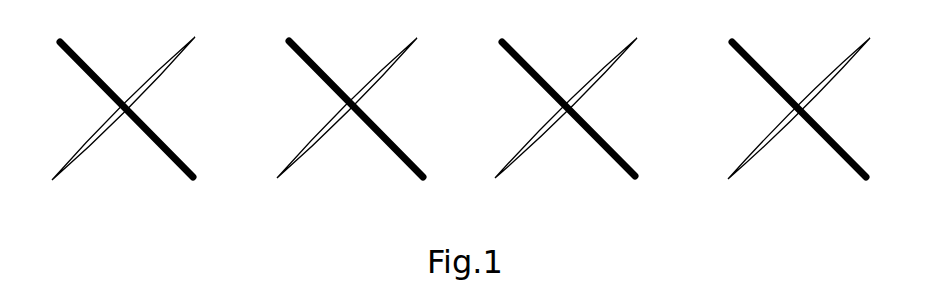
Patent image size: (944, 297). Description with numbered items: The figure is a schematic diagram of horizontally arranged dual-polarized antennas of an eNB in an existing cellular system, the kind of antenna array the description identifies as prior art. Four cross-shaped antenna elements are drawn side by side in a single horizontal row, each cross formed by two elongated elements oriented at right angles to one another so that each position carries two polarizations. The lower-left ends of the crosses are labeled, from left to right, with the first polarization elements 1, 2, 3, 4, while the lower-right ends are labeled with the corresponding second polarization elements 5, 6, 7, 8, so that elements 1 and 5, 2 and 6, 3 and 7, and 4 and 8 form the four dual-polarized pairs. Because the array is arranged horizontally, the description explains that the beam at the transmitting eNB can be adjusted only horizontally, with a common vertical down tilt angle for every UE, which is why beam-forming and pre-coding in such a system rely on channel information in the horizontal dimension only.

The first thin elongated element 1 is at (121, 126).
The second thin elongated element 2 is at (342, 126).
The third thin elongated element 3 is at (563, 126).
The fourth thin elongated element 4 is at (796, 126).
The first thick bar 5 is at (129, 128).
The second thick bar 6 is at (359, 128).
The third thick bar 7 is at (571, 128).
The fourth thick bar 8 is at (802, 128).